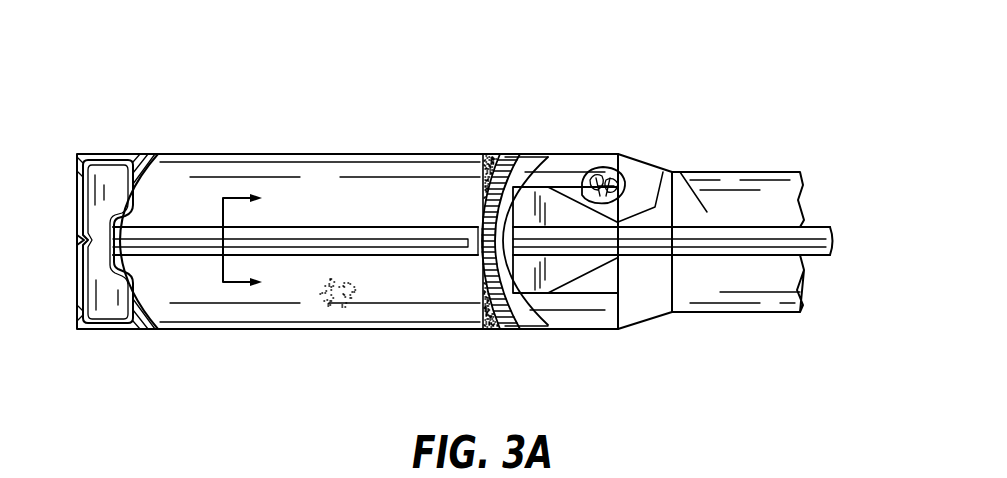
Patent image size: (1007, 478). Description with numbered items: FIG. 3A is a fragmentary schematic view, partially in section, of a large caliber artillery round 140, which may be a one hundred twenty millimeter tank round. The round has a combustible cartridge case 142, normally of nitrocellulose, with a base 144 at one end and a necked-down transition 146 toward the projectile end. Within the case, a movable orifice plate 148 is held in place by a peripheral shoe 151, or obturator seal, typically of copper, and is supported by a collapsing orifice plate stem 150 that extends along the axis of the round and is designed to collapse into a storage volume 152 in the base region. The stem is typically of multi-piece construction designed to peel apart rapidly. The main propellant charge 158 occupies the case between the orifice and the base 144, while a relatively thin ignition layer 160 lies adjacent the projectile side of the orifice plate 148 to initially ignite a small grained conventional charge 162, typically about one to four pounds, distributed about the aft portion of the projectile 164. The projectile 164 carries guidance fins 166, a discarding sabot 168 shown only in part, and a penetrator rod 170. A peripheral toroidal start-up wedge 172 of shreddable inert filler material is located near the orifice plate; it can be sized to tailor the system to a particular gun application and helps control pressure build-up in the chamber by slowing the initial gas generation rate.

The large caliber artillery round 140 is at (362, 102).
The combustible cartridge case 142 is at (203, 155).
The base 144 is at (115, 167).
The necked-down transition 146 is at (652, 165).
The movable orifice plate 148 is at (520, 173).
The collapsing orifice plate stem 150 is at (348, 223).
The peripheral shoe 151 is at (516, 328).
The storage volume 152 is at (106, 305).
The main propellant charge 158 is at (339, 305).
The ignition layer 160 is at (527, 303).
The small grained conventional charge 162 is at (622, 180).
The projectile 164 is at (694, 264).
The guidance fins 166 is at (560, 272).
The discarding sabot 168 is at (683, 197).
The penetrator rod 170 is at (830, 227).
The peripheral toroidal start-up wedge 172 is at (485, 162).